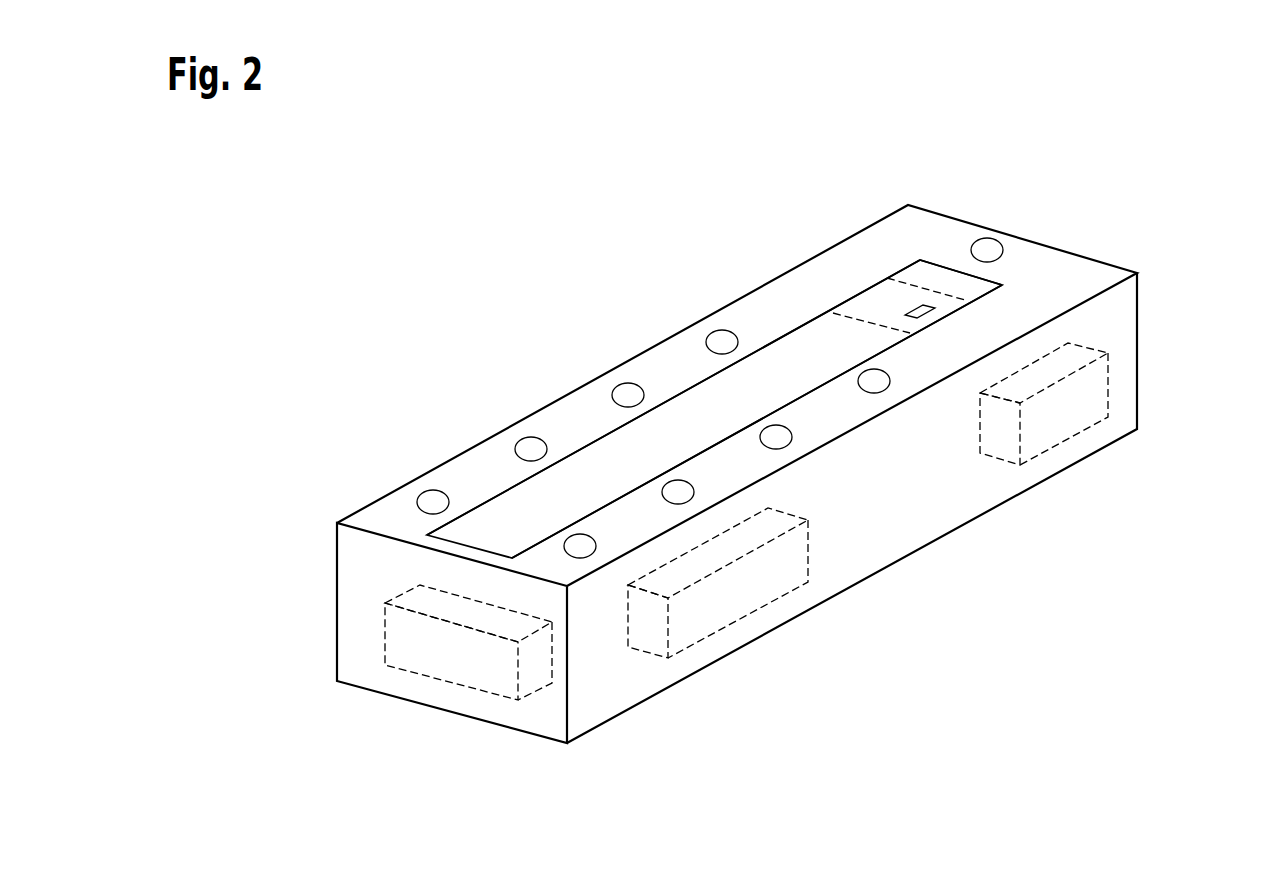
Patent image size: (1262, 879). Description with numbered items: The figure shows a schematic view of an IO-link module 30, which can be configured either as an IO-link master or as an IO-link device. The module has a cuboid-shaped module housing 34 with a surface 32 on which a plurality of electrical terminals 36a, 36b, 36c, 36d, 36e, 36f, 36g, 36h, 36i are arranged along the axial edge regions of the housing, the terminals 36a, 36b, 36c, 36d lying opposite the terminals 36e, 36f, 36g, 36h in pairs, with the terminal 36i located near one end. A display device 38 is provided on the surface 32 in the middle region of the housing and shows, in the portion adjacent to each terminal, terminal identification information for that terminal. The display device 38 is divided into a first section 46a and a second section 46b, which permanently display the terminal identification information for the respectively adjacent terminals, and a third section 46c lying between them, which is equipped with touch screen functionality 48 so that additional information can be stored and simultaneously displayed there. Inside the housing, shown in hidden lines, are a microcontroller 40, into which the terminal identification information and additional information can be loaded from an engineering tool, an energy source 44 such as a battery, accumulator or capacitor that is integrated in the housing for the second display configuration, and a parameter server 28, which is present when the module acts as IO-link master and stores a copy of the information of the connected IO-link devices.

The parameter server 28 is at (1062, 422).
The IO-link module 30 is at (378, 223).
The surface 32 is at (596, 405).
The module housing 34 is at (590, 729).
The electrical terminal 36a is at (433, 502).
The electrical terminal 36b is at (531, 449).
The electrical terminal 36c is at (628, 395).
The electrical terminal 36d is at (722, 342).
The electrical terminal 36e is at (580, 547).
The electrical terminal 36f is at (678, 492).
The electrical terminal 36g is at (775, 438).
The electrical terminal 36h is at (873, 382).
The electrical terminal 36i is at (988, 247).
The display device 38 is at (888, 258).
The microcontroller 40 is at (455, 665).
The energy source 44 is at (703, 622).
The first section 46a is at (518, 508).
The second section 46b is at (957, 286).
The third section 46c is at (873, 300).
The touch screen functionality 48 is at (937, 321).